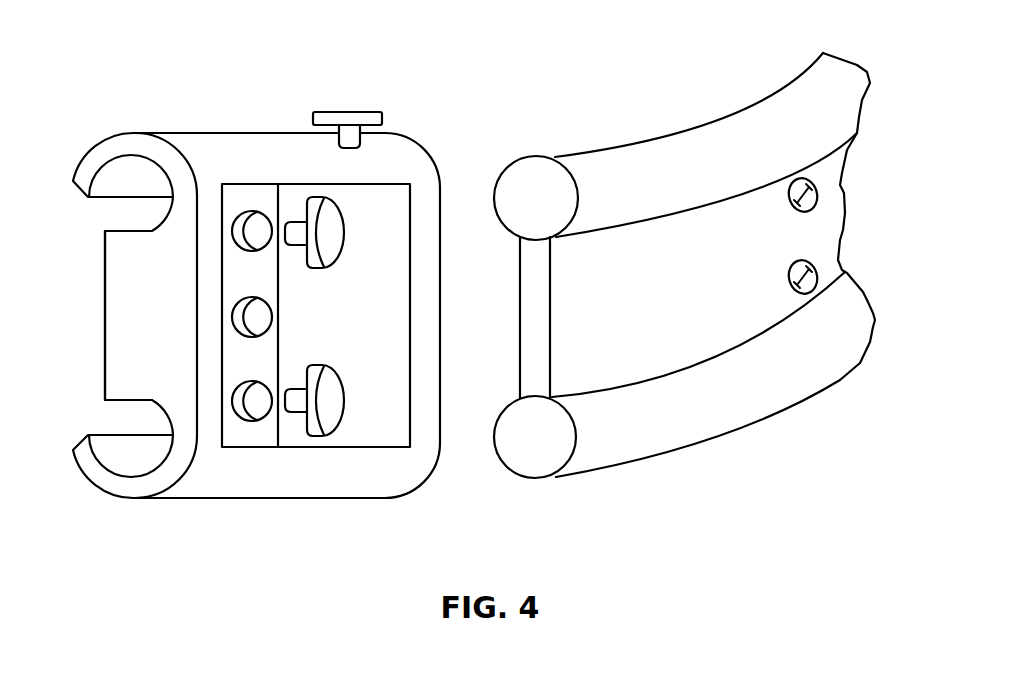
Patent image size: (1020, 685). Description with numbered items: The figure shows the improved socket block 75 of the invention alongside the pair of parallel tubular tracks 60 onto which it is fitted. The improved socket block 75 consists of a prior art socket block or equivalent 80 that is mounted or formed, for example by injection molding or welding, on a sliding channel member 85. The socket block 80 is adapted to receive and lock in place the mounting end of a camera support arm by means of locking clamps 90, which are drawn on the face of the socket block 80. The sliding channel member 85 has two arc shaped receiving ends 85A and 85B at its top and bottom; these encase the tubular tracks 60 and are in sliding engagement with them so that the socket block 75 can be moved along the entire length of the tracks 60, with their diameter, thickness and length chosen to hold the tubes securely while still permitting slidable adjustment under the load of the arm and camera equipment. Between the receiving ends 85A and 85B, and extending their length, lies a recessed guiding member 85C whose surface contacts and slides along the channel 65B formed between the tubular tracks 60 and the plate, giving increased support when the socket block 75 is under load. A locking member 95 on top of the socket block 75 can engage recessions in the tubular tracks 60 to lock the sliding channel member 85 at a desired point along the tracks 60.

The tubular tracks 60 is at (702, 138).
The channel 65B is at (653, 352).
The improved socket block 75 is at (286, 497).
The socket block 80 is at (383, 395).
The sliding channel member 85 is at (97, 353).
The receiving end 85A is at (122, 137).
The receiving end 85B is at (122, 492).
The recessed guiding member 85C is at (105, 313).
The locking clamps 90 is at (337, 230).
The locking member 95 is at (349, 112).